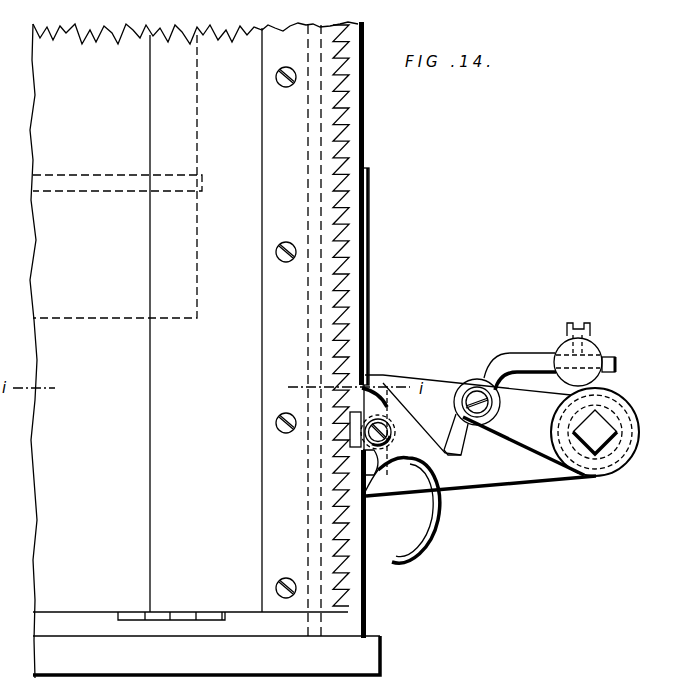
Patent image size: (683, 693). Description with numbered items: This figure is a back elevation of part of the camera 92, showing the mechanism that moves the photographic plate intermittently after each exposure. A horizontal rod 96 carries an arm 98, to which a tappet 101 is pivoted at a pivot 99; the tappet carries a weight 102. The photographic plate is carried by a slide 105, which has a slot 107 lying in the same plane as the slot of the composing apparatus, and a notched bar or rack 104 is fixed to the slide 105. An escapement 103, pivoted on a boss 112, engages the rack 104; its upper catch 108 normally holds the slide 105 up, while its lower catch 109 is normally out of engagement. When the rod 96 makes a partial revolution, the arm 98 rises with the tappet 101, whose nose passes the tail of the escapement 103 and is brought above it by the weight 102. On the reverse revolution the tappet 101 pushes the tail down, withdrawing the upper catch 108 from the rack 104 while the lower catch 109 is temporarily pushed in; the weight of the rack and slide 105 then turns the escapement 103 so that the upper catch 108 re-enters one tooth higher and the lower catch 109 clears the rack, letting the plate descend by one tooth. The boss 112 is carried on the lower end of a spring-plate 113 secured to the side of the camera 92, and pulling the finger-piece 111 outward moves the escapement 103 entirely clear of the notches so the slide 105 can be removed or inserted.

The camera 92 is at (206, 643).
The horizontal rod 96 is at (601, 447).
The arm 98 is at (481, 424).
The pivot 99 is at (472, 387).
The tappet 101 is at (458, 453).
The weight 102 is at (565, 348).
The escapement 103 is at (418, 446).
The notched bar or rack 104 is at (352, 583).
The slide 105 is at (235, 330).
The slot 107 is at (117, 184).
The upper catch 108 is at (383, 358).
The lower catch 109 is at (377, 498).
The finger-piece 111 is at (433, 535).
The boss 112 is at (352, 450).
The spring-plate 113 is at (369, 279).